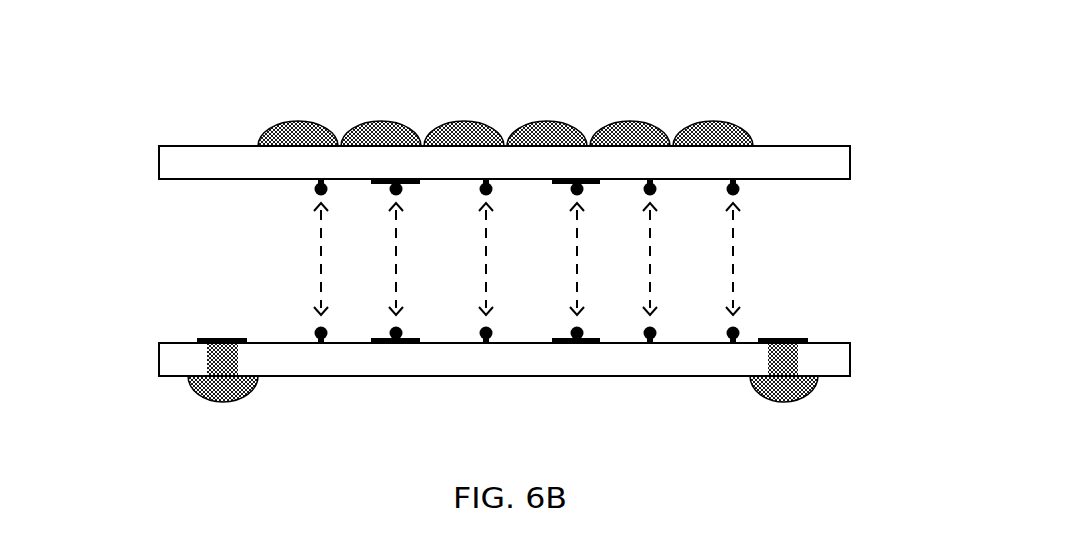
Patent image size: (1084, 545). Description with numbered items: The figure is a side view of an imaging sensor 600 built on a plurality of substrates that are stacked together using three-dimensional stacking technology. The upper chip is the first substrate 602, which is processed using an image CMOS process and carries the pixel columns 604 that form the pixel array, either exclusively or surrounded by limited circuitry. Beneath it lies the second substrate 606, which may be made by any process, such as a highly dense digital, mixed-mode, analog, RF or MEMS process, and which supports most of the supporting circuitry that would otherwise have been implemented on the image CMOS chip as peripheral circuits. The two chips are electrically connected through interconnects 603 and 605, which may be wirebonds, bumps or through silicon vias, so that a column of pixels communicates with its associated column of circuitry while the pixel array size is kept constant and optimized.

The imaging sensor 600 is at (124, 135).
The first substrate 602 is at (842, 165).
The interconnects 603 is at (373, 183).
The pixel columns 604 is at (296, 119).
The interconnects 605 is at (369, 346).
The second substrate 606 is at (843, 367).